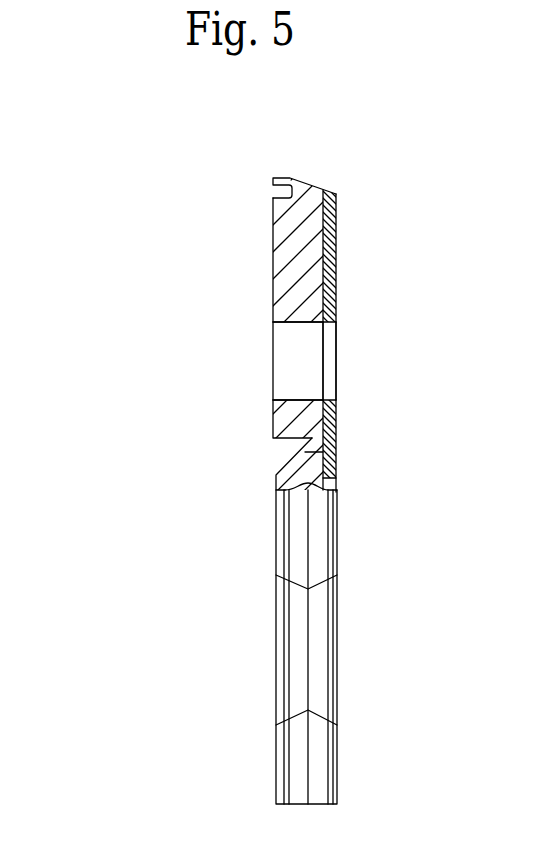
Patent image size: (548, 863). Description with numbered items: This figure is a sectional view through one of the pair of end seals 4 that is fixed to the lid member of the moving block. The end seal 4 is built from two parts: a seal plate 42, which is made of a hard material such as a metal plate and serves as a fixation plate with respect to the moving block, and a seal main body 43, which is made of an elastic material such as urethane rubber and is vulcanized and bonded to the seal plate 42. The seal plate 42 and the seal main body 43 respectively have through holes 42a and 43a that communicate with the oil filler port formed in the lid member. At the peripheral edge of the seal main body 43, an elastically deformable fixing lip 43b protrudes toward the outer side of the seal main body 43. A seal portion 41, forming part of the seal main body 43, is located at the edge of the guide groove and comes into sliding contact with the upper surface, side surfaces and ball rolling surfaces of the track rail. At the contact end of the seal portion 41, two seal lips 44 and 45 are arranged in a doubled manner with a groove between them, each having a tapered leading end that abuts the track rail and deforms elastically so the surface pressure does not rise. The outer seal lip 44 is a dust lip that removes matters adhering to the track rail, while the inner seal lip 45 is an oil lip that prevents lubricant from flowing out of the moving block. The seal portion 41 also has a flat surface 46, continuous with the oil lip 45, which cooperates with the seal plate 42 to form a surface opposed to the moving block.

The end seal 4 is at (163, 229).
The seal portion 41 is at (279, 462).
The seal plate 42 is at (337, 227).
The through hole 42a is at (337, 331).
The seal main body 43 is at (283, 285).
The through hole 43a is at (295, 322).
The fixing lip 43b is at (270, 183).
The seal lip 44 is at (283, 543).
The seal lip 45 is at (335, 528).
The flat surface 46 is at (337, 485).